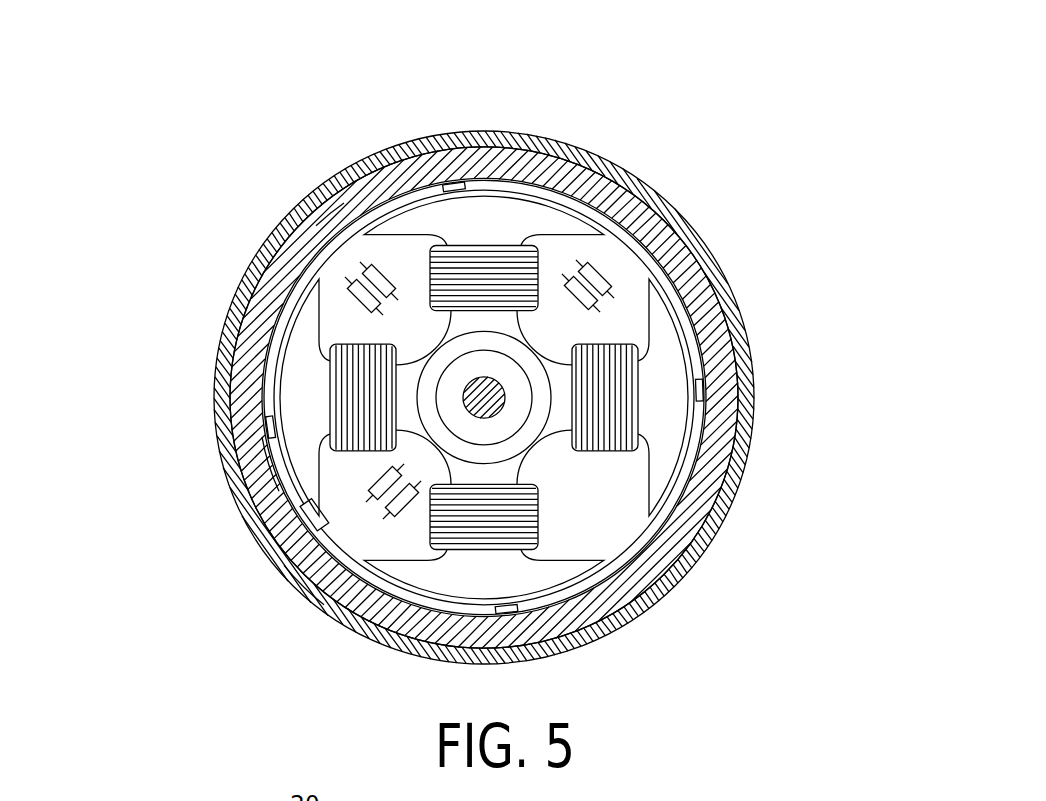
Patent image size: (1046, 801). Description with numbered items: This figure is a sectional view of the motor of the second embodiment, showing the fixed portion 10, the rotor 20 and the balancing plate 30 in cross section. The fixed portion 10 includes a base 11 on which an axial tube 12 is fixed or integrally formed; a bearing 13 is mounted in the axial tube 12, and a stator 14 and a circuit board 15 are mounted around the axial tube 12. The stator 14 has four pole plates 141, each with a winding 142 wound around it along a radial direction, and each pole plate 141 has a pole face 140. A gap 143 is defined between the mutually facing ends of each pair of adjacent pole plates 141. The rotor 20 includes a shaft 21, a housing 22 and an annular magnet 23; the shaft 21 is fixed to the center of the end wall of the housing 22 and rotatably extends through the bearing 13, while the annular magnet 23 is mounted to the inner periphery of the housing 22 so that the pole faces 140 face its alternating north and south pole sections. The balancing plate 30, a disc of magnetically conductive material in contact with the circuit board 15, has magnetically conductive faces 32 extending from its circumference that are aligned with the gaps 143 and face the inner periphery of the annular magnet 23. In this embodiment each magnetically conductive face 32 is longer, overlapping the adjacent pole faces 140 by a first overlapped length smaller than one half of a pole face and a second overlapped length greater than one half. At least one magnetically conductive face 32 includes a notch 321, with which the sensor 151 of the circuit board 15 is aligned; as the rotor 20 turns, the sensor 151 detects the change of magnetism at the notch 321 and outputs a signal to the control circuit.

The fixed portion 10 is at (617, 397).
The base 11 is at (705, 465).
The axial tube 12 is at (537, 413).
The bearing 13 is at (519, 388).
The stator 14 is at (592, 397).
The pole plate 141 is at (672, 348).
The winding 142 is at (622, 369).
The gap 143 is at (302, 258).
The circuit board 15 is at (632, 322).
The pole face 140 is at (268, 467).
The sensor 151 is at (300, 580).
The rotor 20 is at (484, 324).
The shaft 21 is at (478, 393).
The housing 22 is at (602, 173).
The annular magnet 23 is at (452, 160).
The balancing plate 30 is at (265, 452).
The magnetically conductive face 32 is at (337, 617).
The notch 321 is at (310, 597).